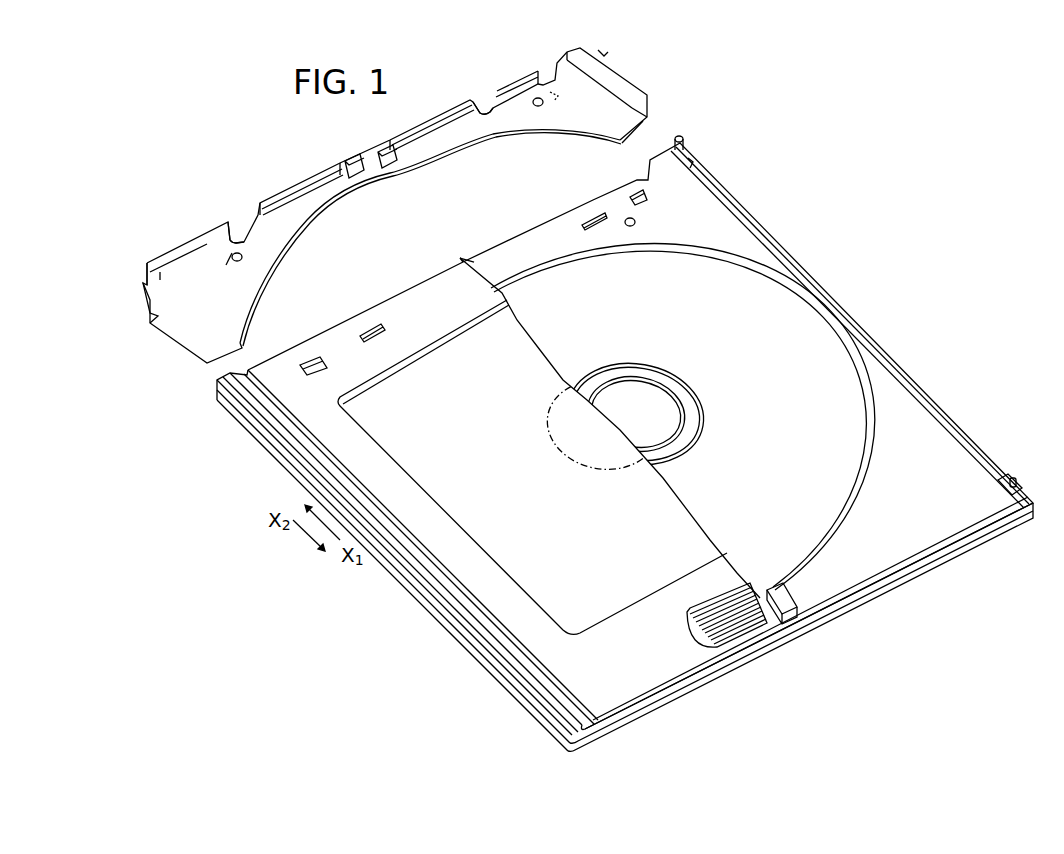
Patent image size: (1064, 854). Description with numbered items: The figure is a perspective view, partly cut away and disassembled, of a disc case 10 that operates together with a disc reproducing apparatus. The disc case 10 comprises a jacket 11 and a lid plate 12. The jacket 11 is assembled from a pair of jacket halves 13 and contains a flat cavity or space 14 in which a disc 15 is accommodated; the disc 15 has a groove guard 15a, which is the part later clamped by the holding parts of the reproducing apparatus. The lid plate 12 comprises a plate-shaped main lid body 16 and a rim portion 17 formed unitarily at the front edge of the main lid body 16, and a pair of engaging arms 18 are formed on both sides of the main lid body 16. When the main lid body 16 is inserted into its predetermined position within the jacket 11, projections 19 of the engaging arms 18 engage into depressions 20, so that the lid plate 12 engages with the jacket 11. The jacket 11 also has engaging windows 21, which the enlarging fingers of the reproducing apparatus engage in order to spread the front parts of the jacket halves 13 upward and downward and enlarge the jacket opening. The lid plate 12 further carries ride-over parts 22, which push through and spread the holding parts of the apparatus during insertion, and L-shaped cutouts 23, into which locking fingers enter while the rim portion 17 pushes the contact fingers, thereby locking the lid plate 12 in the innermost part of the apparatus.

The disc case 10 is at (729, 147).
The jacket 11 is at (426, 613).
The lid plate 12 is at (288, 188).
The jacket half 13 is at (935, 562).
The flat cavity or space 14 is at (930, 420).
The disc 15 is at (858, 430).
The groove guard 15a is at (858, 492).
The main lid body 16 is at (493, 130).
The rim portion 17 is at (417, 130).
The engaging arm 18 is at (630, 77).
The projection 19 is at (603, 52).
The depression 20 is at (693, 166).
The engaging window 21 is at (366, 325).
The ride-over part 22 is at (352, 162).
The L-shaped cutout 23 is at (240, 228).